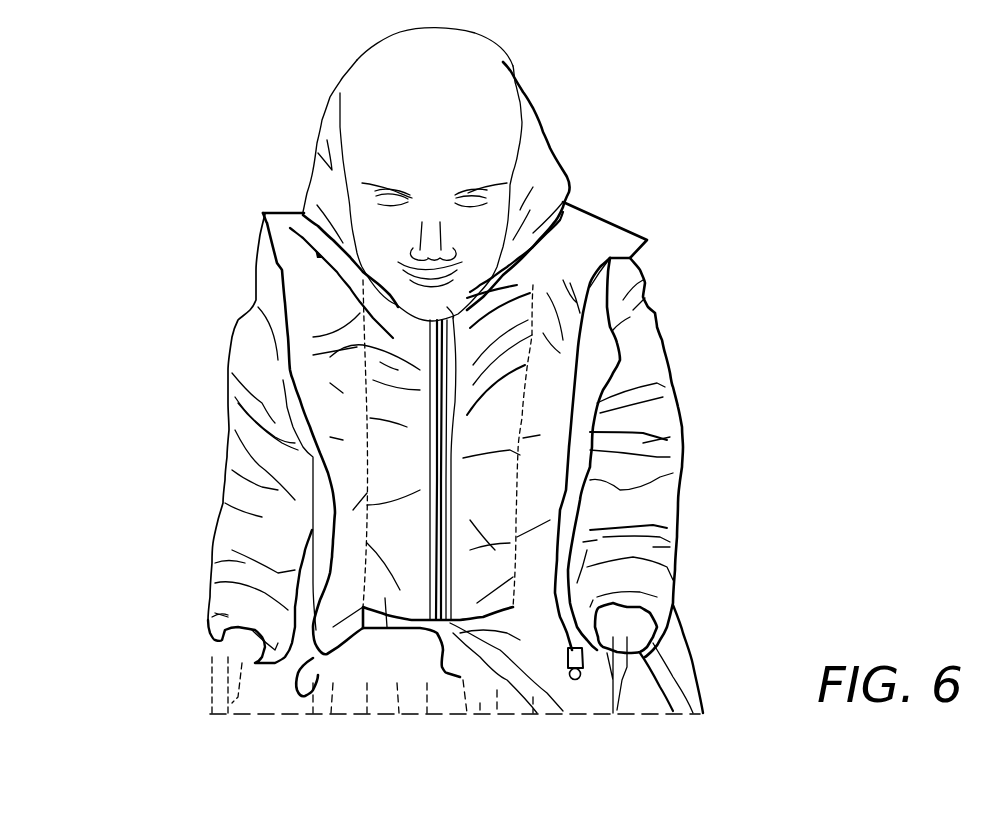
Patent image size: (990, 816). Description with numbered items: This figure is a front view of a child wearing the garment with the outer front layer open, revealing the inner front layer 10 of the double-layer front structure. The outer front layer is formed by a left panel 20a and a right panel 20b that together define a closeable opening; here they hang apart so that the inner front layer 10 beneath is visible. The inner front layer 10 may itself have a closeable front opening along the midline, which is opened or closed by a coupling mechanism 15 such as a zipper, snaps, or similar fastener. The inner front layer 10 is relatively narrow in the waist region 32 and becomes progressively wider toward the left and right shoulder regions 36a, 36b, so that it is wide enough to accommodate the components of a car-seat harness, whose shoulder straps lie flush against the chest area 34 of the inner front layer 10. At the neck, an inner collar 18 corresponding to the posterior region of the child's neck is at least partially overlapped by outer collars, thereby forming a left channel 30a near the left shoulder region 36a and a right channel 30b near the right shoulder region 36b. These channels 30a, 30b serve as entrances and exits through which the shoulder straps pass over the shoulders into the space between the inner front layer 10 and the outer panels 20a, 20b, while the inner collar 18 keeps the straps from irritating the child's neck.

The inner front layer 10 is at (393, 487).
The coupling mechanism 15 is at (450, 478).
The inner collar 18 is at (317, 147).
The left panel 20a is at (557, 397).
The right panel 20b is at (342, 392).
The left channel 30a is at (527, 263).
The right channel 30b is at (267, 212).
The waist region 32 is at (385, 597).
The chest area 34 is at (393, 437).
The left shoulder region 36a is at (573, 262).
The right shoulder region 36b is at (313, 290).